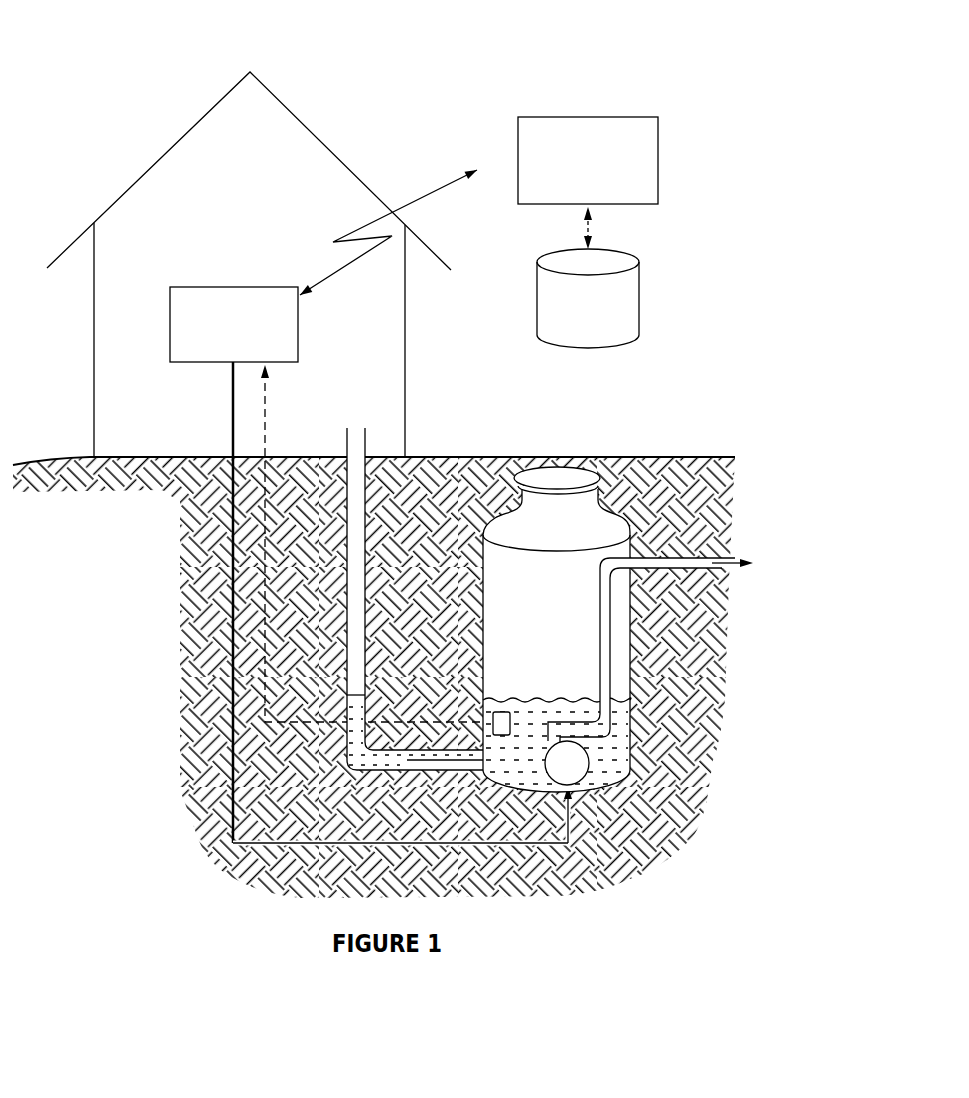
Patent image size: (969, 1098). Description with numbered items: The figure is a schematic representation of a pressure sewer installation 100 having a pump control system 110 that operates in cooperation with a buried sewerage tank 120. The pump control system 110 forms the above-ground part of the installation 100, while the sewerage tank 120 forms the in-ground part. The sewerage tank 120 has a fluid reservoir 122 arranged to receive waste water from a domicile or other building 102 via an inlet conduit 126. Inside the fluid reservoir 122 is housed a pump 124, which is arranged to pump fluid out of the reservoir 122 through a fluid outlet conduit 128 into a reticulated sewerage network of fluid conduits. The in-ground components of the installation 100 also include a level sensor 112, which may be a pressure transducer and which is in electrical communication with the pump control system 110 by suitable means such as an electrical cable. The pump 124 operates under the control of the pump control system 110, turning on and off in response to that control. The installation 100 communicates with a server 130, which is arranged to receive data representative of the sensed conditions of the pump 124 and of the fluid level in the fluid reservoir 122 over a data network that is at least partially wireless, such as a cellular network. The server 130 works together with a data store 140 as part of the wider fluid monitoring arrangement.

The pressure sewer installation 100 is at (378, 76).
The building 102 is at (205, 137).
The pump control system 110 is at (233, 286).
The level sensor 112 is at (492, 716).
The sewerage tank 120 is at (637, 458).
The fluid reservoir 122 is at (632, 757).
The pump 124 is at (575, 768).
The inlet conduit 126 is at (370, 777).
The fluid outlet conduit 128 is at (727, 532).
The server 130 is at (570, 117).
The data store 140 is at (641, 303).